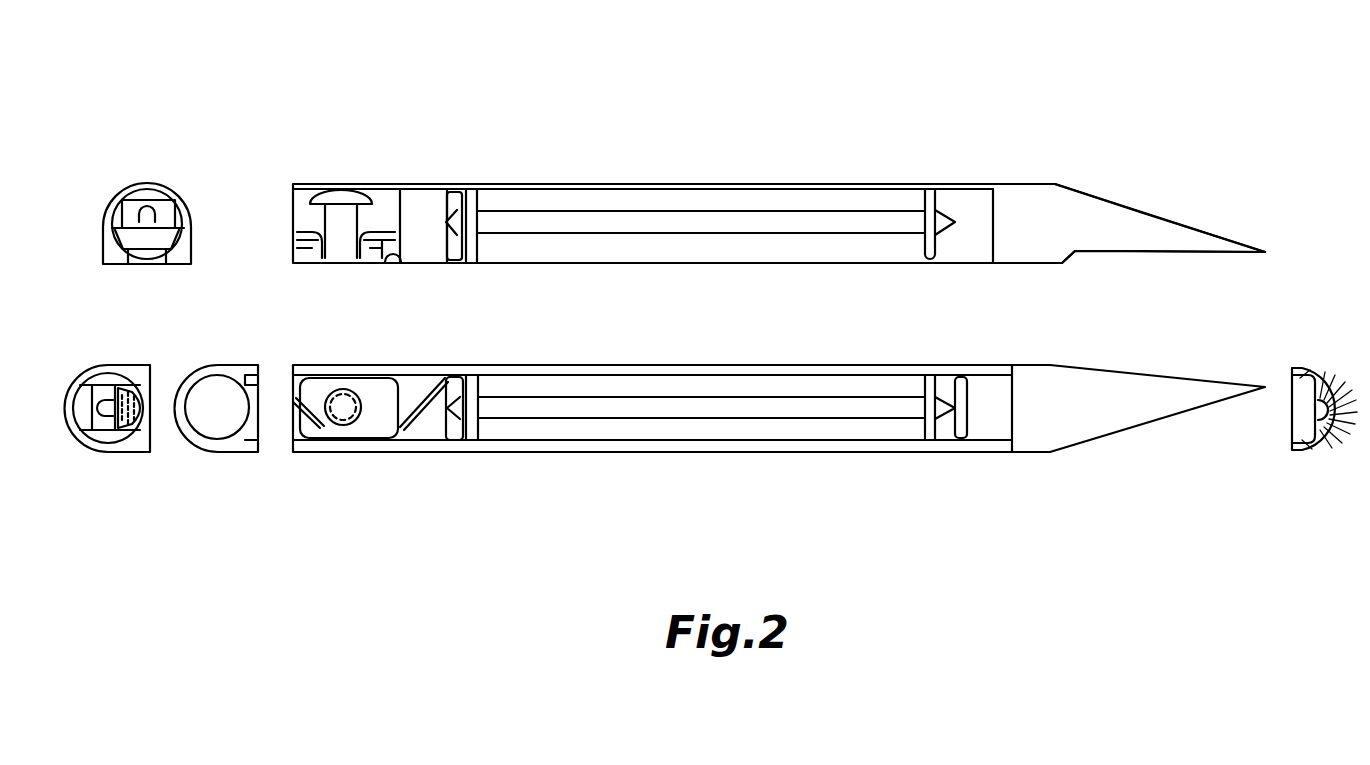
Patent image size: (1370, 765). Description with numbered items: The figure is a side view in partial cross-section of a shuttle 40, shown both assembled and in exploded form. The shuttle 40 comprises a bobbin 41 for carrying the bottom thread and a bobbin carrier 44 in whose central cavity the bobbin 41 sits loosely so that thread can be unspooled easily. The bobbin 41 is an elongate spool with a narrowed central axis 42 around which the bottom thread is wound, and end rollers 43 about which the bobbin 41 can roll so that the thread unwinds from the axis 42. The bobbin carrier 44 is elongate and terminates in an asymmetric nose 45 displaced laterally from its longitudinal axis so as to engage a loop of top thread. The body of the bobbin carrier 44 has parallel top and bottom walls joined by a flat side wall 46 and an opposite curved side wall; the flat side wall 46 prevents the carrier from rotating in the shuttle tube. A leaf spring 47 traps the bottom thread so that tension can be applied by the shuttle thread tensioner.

The shuttle 40 is at (684, 182).
The bobbin 41 is at (568, 210).
The central axis 42 is at (645, 226).
The end rollers 43 is at (930, 252).
The bobbin carrier 44 is at (1027, 200).
The asymmetric nose 45 is at (1215, 240).
The flat side wall 46 is at (258, 425).
The leaf spring 47 is at (373, 420).